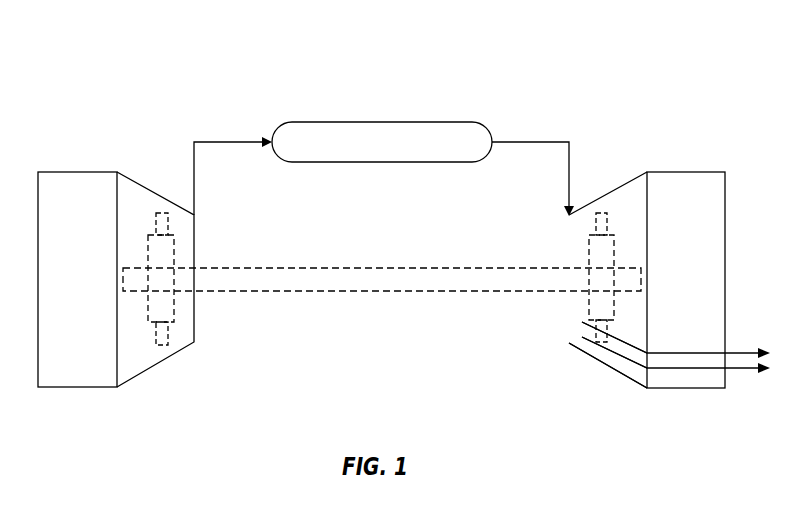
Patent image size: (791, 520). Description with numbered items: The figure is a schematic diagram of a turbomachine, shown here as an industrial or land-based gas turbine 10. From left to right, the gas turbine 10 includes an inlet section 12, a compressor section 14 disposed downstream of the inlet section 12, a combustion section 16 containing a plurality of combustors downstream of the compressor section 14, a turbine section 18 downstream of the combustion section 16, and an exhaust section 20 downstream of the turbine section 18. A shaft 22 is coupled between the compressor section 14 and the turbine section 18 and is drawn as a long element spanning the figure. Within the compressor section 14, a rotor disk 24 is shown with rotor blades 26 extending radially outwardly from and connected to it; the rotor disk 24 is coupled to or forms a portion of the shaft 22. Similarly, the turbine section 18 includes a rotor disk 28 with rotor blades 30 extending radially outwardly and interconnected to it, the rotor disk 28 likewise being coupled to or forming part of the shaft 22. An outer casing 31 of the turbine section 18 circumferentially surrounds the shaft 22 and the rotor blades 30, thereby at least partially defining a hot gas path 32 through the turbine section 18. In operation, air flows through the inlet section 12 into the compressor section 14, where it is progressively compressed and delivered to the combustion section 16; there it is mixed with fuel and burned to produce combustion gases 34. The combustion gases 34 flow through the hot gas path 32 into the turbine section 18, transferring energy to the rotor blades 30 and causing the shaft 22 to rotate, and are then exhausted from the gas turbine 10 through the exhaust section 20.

The gas turbine 10 is at (238, 66).
The inlet section 12 is at (62, 172).
The compressor section 14 is at (148, 188).
The combustion section 16 is at (434, 122).
The turbine section 18 is at (625, 182).
The exhaust section 20 is at (703, 172).
The shaft 22 is at (343, 292).
The rotor disk 24 is at (148, 248).
The rotor blades 26 is at (153, 225).
The rotor disk 28 is at (589, 252).
The rotor blades 30 is at (600, 212).
The outer casing 31 is at (630, 380).
The hot gas path 32 is at (609, 366).
The combustion gases 34 is at (537, 142).